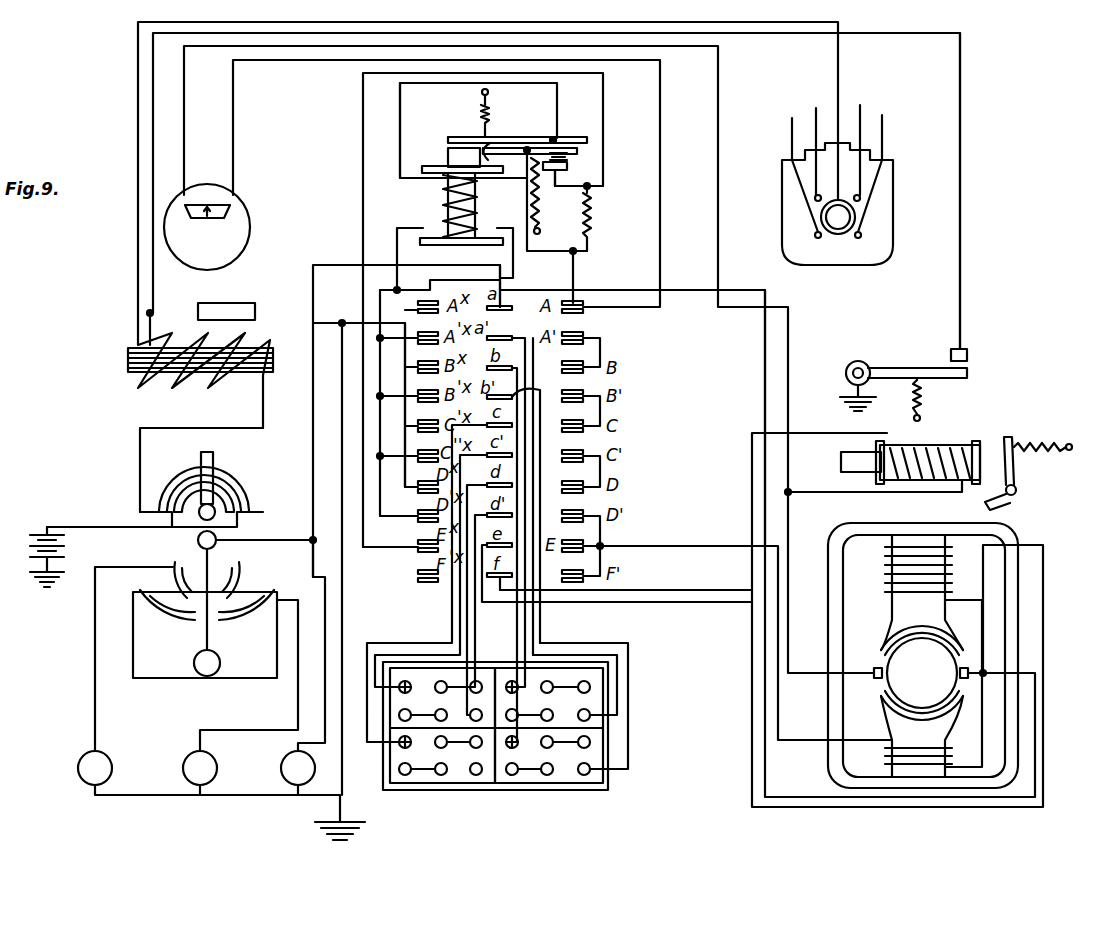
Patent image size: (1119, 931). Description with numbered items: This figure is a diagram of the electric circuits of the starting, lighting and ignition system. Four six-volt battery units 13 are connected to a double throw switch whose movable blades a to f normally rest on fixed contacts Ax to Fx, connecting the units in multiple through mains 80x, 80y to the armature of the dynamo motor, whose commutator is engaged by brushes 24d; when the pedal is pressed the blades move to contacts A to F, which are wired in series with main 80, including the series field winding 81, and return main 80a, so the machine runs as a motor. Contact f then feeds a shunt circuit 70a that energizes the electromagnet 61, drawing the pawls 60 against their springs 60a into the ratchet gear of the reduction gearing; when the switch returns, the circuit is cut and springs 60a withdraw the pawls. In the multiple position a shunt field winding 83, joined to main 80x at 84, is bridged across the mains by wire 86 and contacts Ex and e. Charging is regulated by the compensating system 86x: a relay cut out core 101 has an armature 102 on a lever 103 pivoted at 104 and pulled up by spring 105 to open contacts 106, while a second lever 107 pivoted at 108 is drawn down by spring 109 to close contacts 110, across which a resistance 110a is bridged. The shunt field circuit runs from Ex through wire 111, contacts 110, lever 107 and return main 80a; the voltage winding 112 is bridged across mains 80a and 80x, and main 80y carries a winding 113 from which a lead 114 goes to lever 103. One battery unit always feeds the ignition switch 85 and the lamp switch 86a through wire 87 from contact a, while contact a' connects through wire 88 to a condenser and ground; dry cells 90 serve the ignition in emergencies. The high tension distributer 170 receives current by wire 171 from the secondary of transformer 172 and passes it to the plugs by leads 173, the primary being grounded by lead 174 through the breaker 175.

The battery units 13 is at (415, 668).
The brushes 24d is at (1066, 712).
The spring controlled pawls 60 is at (1012, 437).
The springs 60a is at (1045, 443).
The electromagnet 61 is at (965, 448).
The shunt circuit 70a is at (698, 590).
The main 80 is at (668, 542).
The return main 80a is at (232, 150).
The main 80x is at (1050, 666).
The battery main 80y is at (405, 405).
The field winding 81 is at (885, 757).
The shunt field winding 83 is at (950, 585).
The connection point 84 is at (985, 672).
The switch 85 is at (195, 483).
The wire 86 is at (1043, 595).
The switch 86a is at (213, 638).
The compensating system 86x is at (443, 198).
The wire 87 is at (420, 270).
The wire 88 is at (500, 312).
The dry cells 90 is at (66, 553).
The relay cut out core 101 is at (460, 155).
The armature 102 is at (455, 136).
The lever 103 is at (491, 113).
The pivot 104 is at (556, 140).
The spring 105 is at (490, 102).
The contacts 106 is at (504, 158).
The second lever 107 is at (578, 151).
The pivot 108 is at (540, 137).
The spring 109 is at (542, 205).
The contacts 110 is at (570, 165).
The resistance 110a is at (592, 212).
The wire 111 is at (363, 207).
The voltage winding 112 is at (475, 176).
The winding 113 is at (443, 206).
The lead 114 is at (400, 96).
The high tension distributer 170 is at (893, 222).
The wire 171 is at (840, 72).
The transformer 172 is at (205, 375).
The leads 173 is at (862, 108).
The lead 174 is at (961, 290).
The interrupter or breaker 175 is at (792, 122).